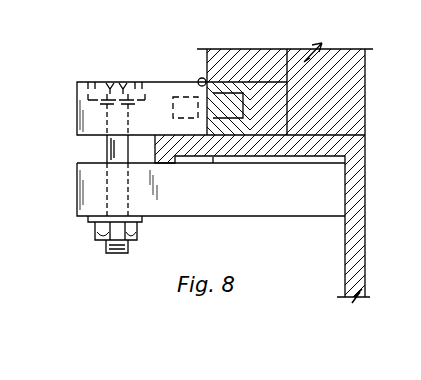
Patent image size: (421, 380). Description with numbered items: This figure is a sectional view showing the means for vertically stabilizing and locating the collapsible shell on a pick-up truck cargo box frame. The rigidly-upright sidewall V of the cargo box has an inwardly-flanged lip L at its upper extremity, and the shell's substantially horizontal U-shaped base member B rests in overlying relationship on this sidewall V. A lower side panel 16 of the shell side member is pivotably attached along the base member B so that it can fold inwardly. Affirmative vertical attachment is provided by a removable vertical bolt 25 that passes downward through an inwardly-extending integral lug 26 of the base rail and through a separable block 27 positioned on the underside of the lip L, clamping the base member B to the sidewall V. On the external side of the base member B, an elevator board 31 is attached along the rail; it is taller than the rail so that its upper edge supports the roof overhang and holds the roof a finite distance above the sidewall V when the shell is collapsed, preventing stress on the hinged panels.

The lower side panel 16 is at (273, 49).
The elevator board 31 is at (365, 84).
The integral lug 26 is at (77, 108).
The removable vertical bolt 25 is at (107, 147).
The separable block 27 is at (77, 190).
The base member B is at (207, 113).
The inwardly-flanged lip L is at (213, 163).
The upright sidewall V is at (365, 218).